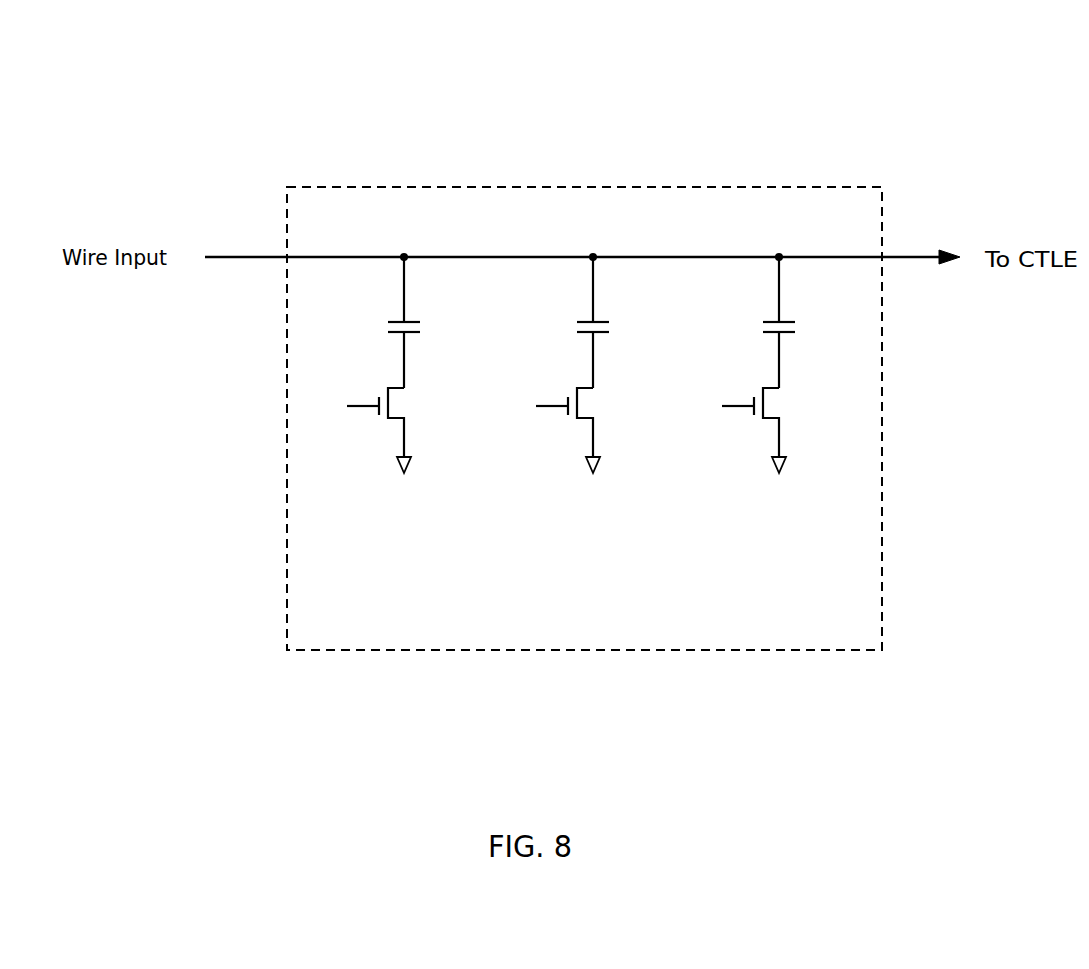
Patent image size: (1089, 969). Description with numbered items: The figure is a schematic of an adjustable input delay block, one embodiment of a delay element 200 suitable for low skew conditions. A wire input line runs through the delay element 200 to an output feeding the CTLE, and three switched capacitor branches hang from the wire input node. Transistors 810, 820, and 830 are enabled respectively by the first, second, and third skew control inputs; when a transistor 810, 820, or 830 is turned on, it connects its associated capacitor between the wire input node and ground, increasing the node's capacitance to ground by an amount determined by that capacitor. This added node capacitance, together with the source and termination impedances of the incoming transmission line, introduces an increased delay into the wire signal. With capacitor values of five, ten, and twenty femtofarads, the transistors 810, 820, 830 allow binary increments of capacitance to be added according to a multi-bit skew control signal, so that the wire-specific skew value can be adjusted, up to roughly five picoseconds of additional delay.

The delay element 200 is at (568, 187).
The transistor 810 is at (404, 387).
The transistor 820 is at (593, 387).
The transistor 830 is at (779, 387).